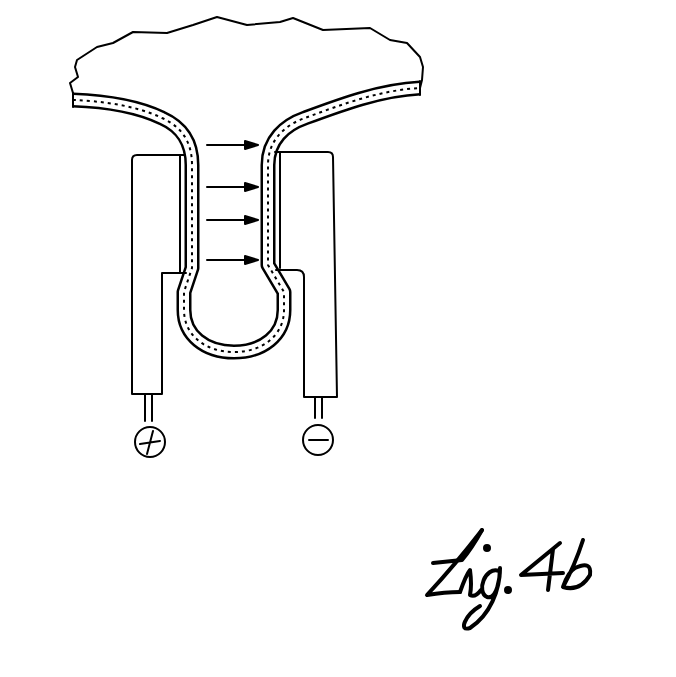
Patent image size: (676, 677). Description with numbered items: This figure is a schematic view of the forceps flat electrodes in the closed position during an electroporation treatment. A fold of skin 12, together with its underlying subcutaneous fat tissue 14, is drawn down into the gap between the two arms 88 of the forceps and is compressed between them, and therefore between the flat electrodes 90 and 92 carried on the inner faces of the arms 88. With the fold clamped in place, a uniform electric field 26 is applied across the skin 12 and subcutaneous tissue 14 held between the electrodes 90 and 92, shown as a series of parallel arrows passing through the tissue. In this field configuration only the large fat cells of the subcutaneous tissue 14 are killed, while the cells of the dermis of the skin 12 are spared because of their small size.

The skin 12 is at (412, 94).
The subcutaneous tissue 14 is at (320, 92).
The uniform electric field 26 is at (232, 144).
The arms 88 is at (131, 235).
The electrode 90 is at (181, 190).
The electrode 92 is at (281, 208).